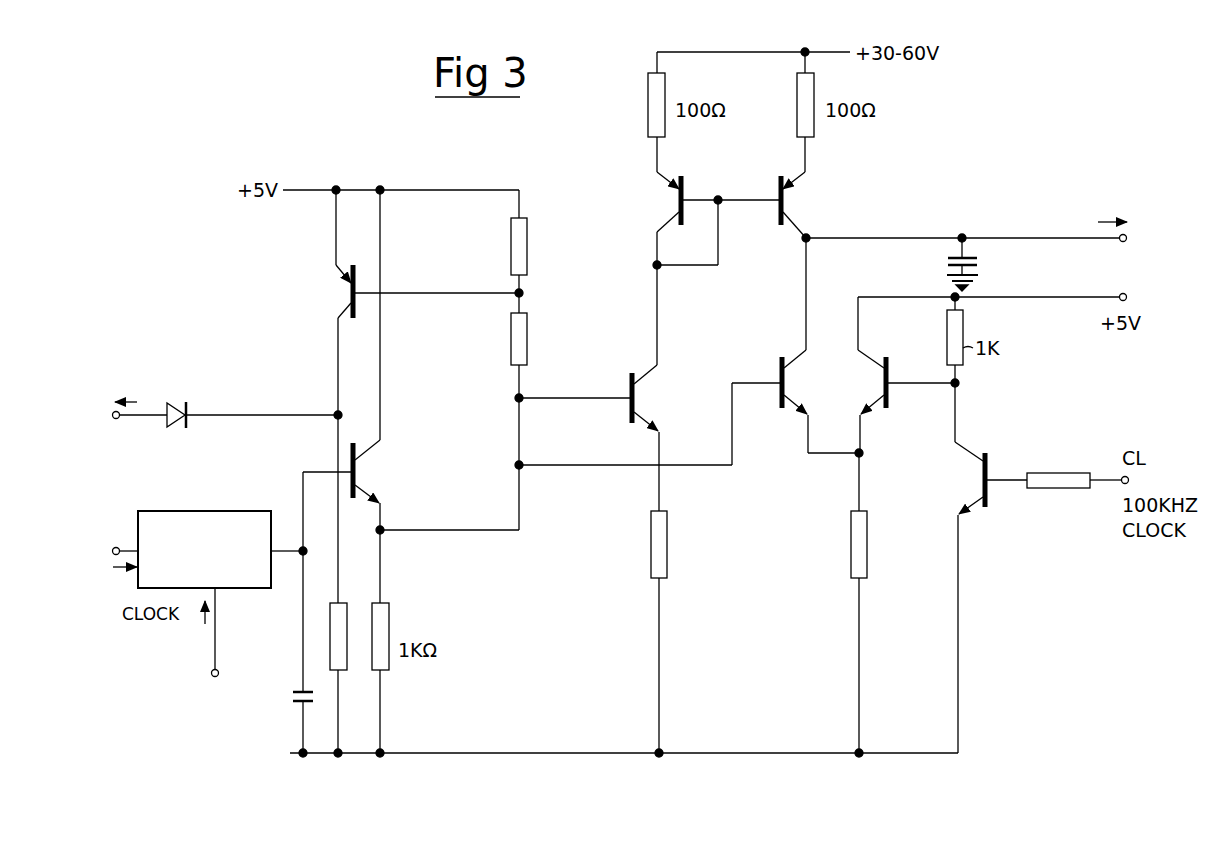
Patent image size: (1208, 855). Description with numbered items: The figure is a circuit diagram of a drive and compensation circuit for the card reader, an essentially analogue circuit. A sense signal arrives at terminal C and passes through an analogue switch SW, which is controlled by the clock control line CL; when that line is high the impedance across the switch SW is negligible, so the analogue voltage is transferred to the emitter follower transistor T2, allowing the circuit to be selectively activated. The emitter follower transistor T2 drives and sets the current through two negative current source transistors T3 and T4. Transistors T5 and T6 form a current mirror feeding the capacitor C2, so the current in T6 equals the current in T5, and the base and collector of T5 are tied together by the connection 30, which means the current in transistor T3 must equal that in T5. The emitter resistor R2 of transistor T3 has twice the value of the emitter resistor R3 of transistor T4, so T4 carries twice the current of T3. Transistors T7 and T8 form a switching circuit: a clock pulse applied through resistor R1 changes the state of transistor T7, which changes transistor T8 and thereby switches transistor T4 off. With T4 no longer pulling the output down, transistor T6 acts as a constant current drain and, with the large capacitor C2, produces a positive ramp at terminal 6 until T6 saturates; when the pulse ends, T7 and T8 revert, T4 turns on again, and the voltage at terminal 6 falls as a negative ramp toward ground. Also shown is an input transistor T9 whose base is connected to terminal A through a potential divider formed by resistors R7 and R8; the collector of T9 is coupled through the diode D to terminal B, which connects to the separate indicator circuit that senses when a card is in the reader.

The connection 30 is at (718, 265).
The terminal 6 is at (967, 248).
The emitter follower transistor T2 is at (360, 478).
The negative current source transistor T3 is at (634, 392).
The negative current source transistor T4 is at (784, 386).
The current mirror transistor T5 is at (679, 200).
The current mirror transistor T6 is at (783, 205).
The switching transistor T7 is at (982, 478).
The switching transistor T8 is at (884, 386).
The input transistor T9 is at (344, 293).
The resistor R1 is at (1050, 503).
The emitter resistor R2 is at (651, 546).
The emitter resistor R3 is at (851, 546).
The resistor R7 is at (528, 348).
The resistor R8 is at (528, 252).
The capacitor C2 is at (885, 259).
The diode D is at (184, 402).
The analogue switch SW is at (220, 549).
The terminal A is at (562, 399).
The terminal B is at (131, 371).
The terminal C is at (129, 579).
The clock control line CL is at (229, 636).